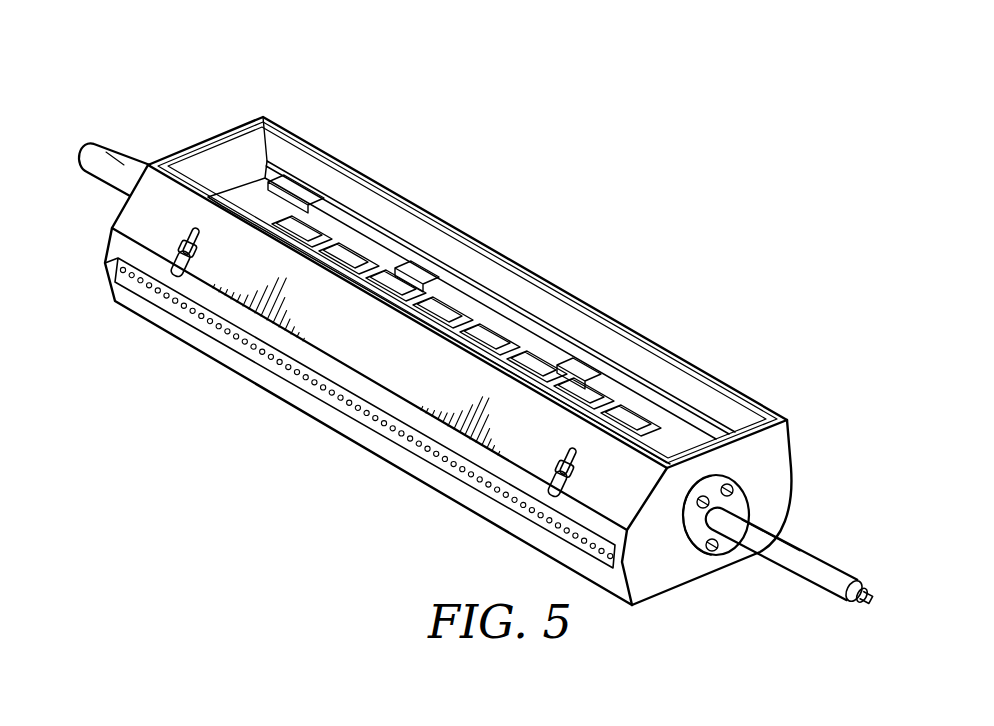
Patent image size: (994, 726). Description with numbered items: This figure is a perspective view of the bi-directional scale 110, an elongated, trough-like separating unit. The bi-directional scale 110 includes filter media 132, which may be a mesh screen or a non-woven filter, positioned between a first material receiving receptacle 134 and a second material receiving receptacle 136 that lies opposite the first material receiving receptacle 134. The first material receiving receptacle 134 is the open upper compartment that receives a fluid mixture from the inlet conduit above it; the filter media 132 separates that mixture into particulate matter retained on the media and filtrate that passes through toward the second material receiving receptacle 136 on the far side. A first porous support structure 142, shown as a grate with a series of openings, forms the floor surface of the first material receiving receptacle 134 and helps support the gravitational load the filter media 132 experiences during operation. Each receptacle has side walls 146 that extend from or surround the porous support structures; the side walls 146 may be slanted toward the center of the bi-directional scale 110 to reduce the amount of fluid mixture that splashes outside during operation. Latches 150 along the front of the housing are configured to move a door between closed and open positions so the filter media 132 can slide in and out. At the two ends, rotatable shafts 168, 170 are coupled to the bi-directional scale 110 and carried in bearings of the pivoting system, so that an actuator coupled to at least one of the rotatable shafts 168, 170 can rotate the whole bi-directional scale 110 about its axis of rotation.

The bi-directional scale 110 is at (659, 106).
The filter media 132 is at (447, 285).
The first material receiving receptacle 134 is at (205, 84).
The second material receiving receptacle 136 is at (663, 632).
The first porous support structure 142 is at (637, 386).
The side walls 146 is at (343, 187).
The latches 150 is at (197, 234).
The rotatable shaft 168 is at (98, 150).
The rotatable shaft 170 is at (834, 561).